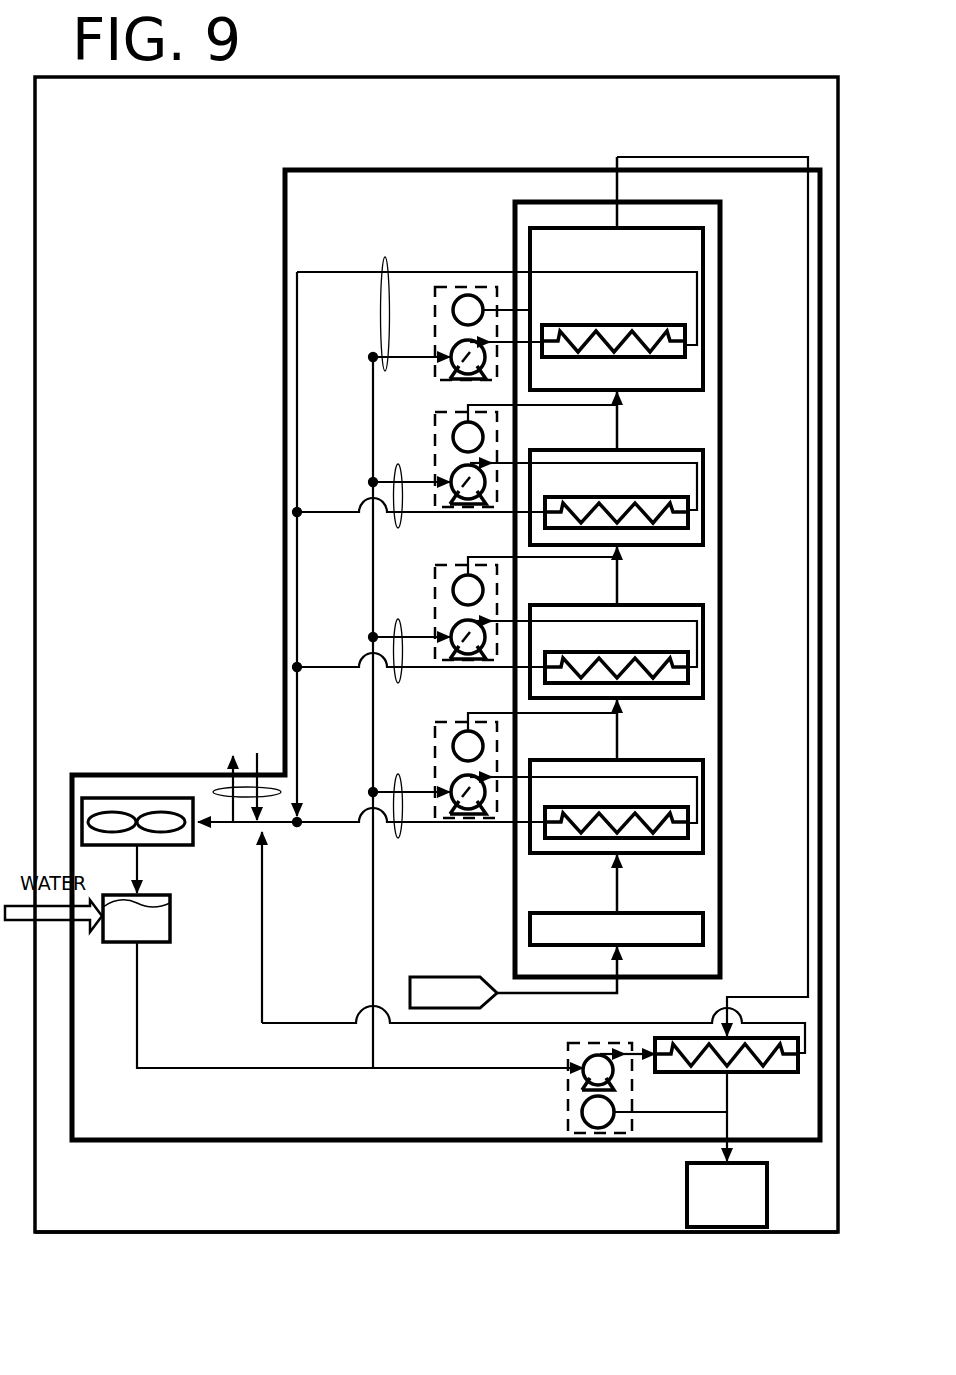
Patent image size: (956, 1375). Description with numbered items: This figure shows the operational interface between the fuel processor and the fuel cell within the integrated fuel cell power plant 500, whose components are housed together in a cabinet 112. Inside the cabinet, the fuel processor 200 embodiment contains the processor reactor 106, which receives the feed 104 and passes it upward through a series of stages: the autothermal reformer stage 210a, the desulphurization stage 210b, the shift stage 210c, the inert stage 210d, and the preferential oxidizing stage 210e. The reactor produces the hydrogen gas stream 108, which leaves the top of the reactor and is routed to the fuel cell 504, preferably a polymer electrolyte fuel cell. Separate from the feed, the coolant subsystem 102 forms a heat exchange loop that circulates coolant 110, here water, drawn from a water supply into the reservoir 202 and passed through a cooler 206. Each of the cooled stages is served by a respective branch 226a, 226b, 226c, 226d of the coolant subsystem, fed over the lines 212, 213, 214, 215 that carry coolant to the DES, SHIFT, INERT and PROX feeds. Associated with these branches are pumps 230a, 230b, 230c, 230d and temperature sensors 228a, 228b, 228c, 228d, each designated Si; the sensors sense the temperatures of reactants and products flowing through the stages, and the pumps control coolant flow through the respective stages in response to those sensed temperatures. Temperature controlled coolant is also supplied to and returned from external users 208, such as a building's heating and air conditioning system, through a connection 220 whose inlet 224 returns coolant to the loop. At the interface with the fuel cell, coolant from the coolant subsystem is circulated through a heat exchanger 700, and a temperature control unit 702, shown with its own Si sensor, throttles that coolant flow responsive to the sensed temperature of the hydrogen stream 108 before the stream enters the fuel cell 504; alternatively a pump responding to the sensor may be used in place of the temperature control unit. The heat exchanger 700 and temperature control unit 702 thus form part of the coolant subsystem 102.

The fuel cell power plant 500 is at (455, 131).
The coolant subsystem 102 is at (158, 1088).
The cabinet 112 is at (228, 1231).
The processor reactor 106 is at (463, 221).
The hydrogen gas stream 108 is at (615, 157).
The feed 104 is at (503, 990).
The coolant 110 is at (120, 934).
The reservoir 202 is at (343, 981).
The cooler 206 is at (131, 797).
The external users 208 is at (156, 659).
The fuel processor 200 is at (247, 393).
The connection 220 is at (283, 790).
The inlet 224 is at (265, 808).
The reformer stage 210a is at (708, 930).
The desulphurization stage 210b is at (705, 806).
The shift stage 210c is at (705, 650).
The inert stage 210d is at (705, 495).
The preferential oxidizing stage 210e is at (705, 303).
The line 212 is at (533, 783).
The line 213 is at (495, 628).
The line 214 is at (495, 474).
The line 215 is at (497, 330).
The branch 226a is at (397, 838).
The branch 226b is at (397, 683).
The branch 226c is at (397, 528).
The branch 226d is at (383, 372).
The temperature sensor 228a is at (483, 746).
The temperature sensor 228b is at (483, 590).
The temperature sensor 228c is at (483, 432).
The temperature sensor 228d is at (478, 290).
The pump 230a is at (475, 817).
The pump 230b is at (475, 662).
The pump 230c is at (475, 507).
The pump 230d is at (448, 382).
The heat exchanger 700 is at (745, 1072).
The temperature control unit 702 is at (565, 1087).
The fuel cell 504 is at (683, 1194).